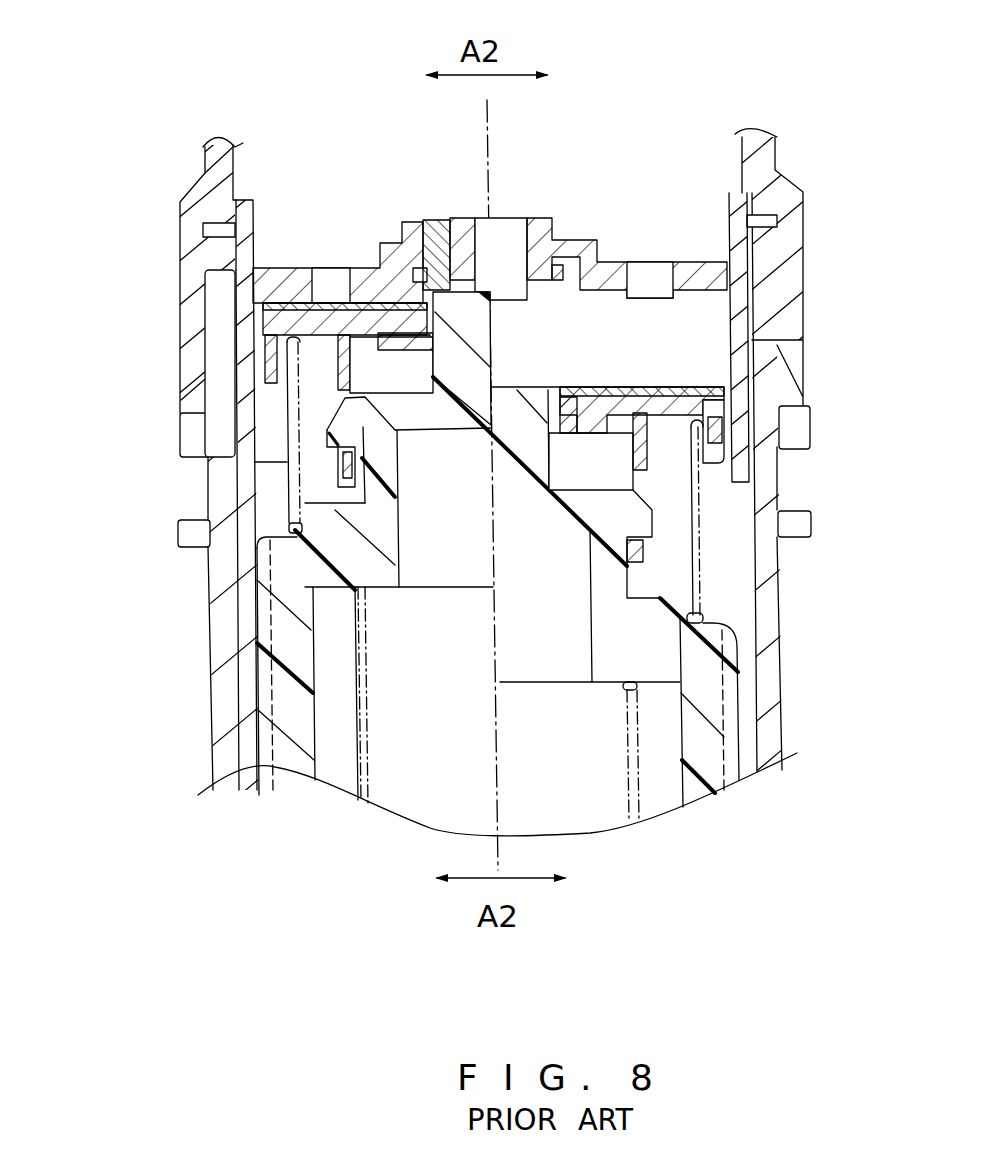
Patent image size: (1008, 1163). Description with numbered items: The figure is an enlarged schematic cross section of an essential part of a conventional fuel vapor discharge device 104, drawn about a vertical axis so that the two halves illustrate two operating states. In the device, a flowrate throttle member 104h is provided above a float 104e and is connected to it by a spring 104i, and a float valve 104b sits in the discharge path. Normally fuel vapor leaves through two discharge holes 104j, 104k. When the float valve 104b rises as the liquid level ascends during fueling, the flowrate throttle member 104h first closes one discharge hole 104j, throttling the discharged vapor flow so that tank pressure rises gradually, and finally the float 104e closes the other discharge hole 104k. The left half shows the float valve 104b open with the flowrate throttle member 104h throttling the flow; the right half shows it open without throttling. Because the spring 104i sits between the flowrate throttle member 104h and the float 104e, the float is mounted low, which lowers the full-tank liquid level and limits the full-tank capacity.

The fuel vapor discharge device 104 is at (170, 120).
The float valve 104b is at (468, 256).
The float 104e is at (703, 688).
The flowrate throttle member 104h is at (258, 330).
The spring 104i is at (287, 453).
The discharge hole 104j is at (340, 290).
The discharge hole 104k is at (453, 220).